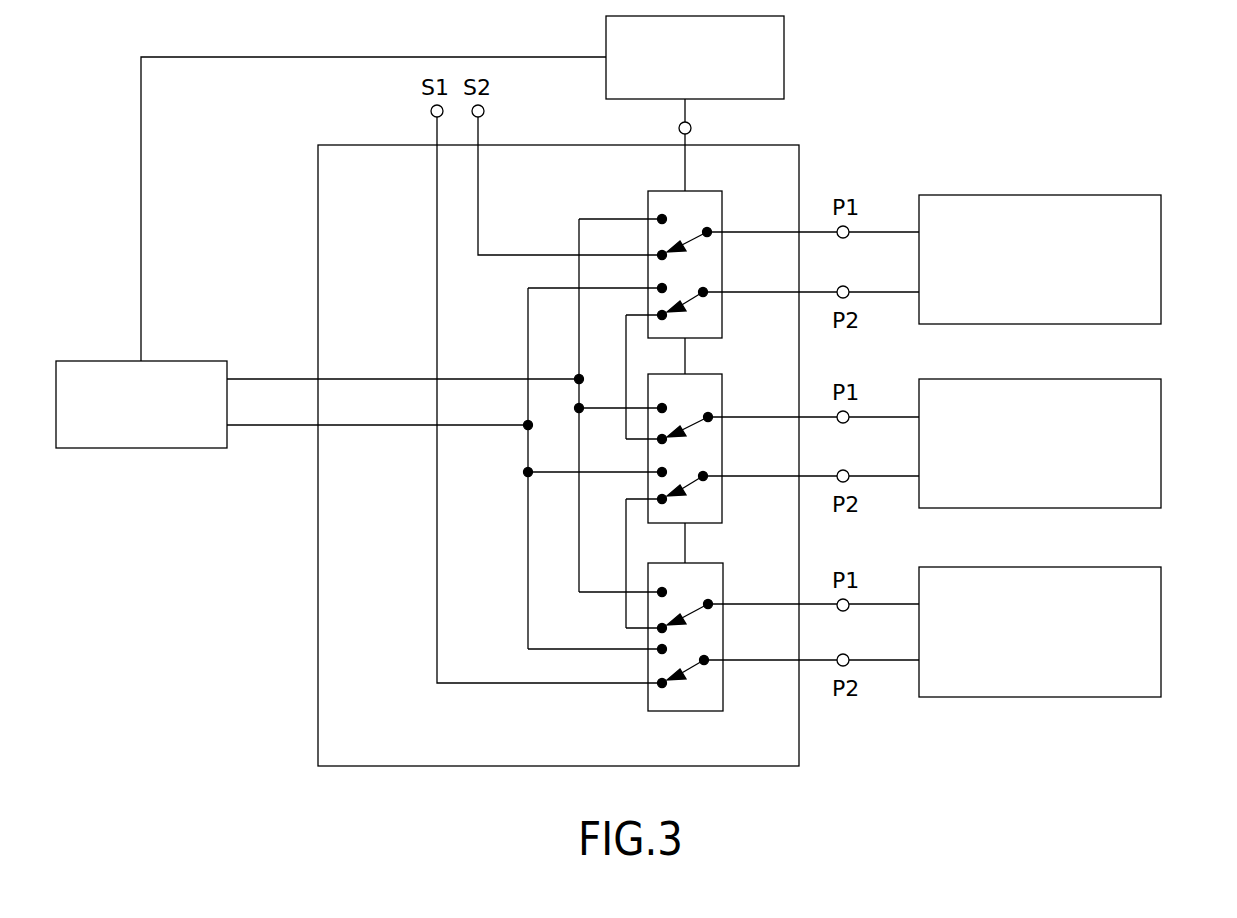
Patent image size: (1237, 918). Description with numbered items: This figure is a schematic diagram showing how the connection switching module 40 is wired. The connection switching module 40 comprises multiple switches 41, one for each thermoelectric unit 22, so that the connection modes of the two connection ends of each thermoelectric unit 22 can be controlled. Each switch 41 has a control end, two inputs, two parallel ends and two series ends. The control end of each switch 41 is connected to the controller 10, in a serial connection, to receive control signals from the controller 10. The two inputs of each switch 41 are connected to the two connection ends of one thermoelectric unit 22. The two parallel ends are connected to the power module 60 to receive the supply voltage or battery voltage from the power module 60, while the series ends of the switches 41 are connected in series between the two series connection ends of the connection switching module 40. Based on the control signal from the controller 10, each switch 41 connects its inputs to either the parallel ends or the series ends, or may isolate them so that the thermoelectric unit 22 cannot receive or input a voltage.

The controller 10 is at (784, 57).
The connection switching module 40 is at (770, 145).
The switch 41 is at (722, 203).
The thermoelectric unit 22 is at (1161, 245).
The power module 60 is at (173, 361).